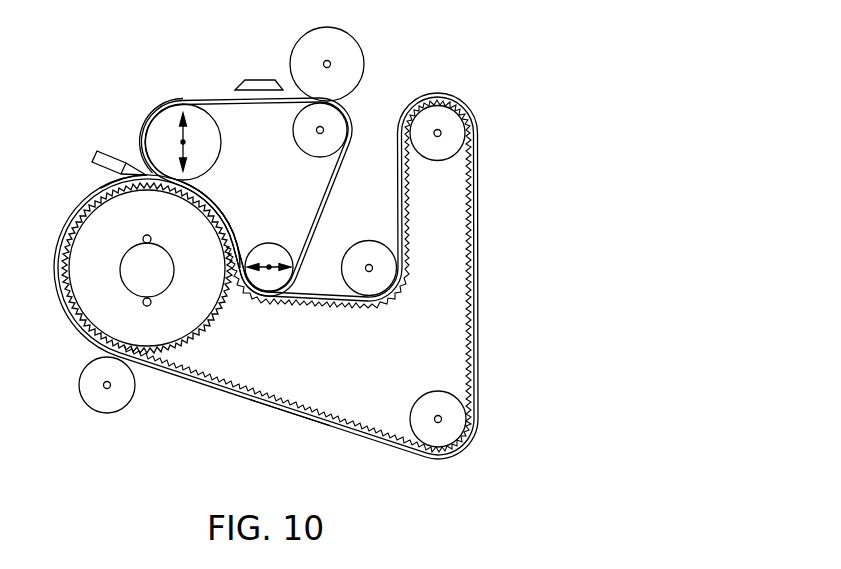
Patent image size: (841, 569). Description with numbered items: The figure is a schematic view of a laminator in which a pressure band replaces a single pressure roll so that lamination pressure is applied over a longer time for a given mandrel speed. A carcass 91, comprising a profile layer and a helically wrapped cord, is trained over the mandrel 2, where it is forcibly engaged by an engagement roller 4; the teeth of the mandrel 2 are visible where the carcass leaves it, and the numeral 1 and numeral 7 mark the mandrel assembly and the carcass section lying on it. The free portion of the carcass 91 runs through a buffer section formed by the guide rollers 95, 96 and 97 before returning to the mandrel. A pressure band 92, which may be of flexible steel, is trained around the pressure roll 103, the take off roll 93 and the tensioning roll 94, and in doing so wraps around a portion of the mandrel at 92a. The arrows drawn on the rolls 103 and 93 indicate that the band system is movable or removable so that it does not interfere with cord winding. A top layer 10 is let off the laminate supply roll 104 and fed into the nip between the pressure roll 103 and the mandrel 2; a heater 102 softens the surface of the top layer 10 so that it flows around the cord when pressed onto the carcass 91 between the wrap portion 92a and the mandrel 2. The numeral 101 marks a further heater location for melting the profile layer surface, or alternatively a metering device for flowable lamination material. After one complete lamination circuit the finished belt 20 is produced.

The sprocket 1 is at (69, 216).
The mandrel 2 is at (197, 320).
The engagement roller 4 is at (95, 402).
The belt section on sprocket 7 is at (100, 191).
The top layer 10 is at (157, 104).
The finished belt 20 is at (473, 268).
The carcass 91 is at (287, 411).
The pressure band 92 is at (328, 188).
The wrap portion of the pressure band 92a is at (220, 200).
The take off roll 93 is at (263, 250).
The tensioning roll 94 is at (334, 138).
The guide roller 95 is at (453, 410).
The guide roller 96 is at (388, 279).
The guide roller 97 is at (452, 120).
The heater location 101 is at (107, 151).
The heater 102 is at (260, 81).
The pressure roll 103 is at (215, 136).
The laminate supply roll 104 is at (354, 49).